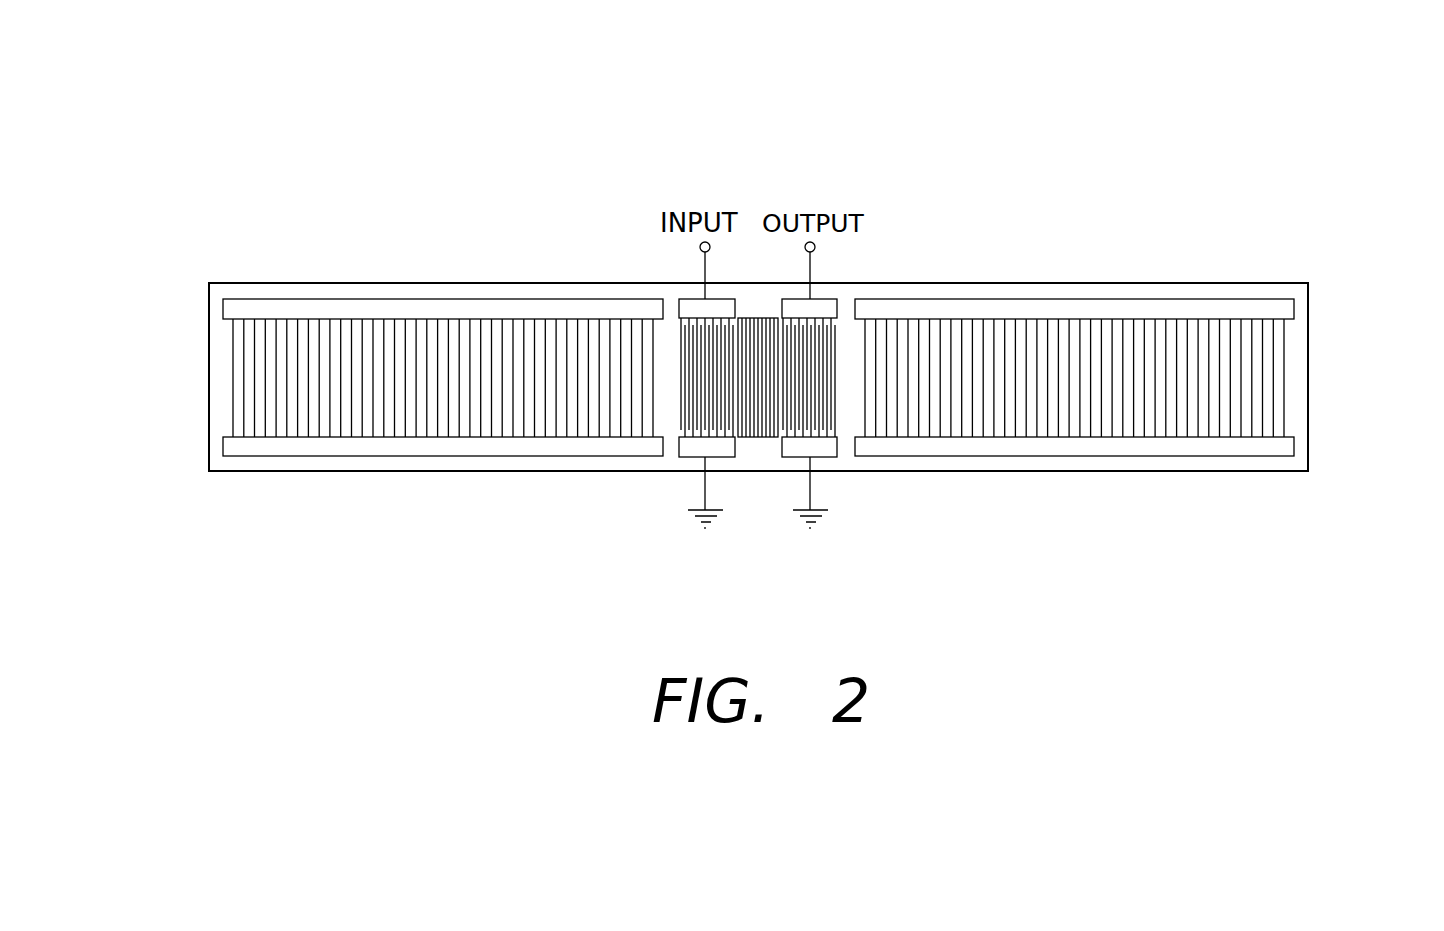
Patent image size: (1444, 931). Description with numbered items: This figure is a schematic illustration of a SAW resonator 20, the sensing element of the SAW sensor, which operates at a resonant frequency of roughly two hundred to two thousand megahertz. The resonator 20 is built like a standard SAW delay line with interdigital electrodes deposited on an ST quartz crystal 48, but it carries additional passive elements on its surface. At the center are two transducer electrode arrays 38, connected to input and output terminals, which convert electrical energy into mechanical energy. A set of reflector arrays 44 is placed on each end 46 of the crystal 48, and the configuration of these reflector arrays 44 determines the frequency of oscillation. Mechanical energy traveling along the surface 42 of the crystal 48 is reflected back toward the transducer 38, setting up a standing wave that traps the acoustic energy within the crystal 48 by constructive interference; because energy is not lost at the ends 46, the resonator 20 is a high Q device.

The SAW resonator 20 is at (879, 78).
The transducer electrode arrays 38 is at (717, 415).
The surface of the crystal 42 is at (277, 462).
The reflector arrays 44 is at (363, 370).
The ends of the crystal 46 is at (208, 400).
The crystal 48 is at (582, 288).